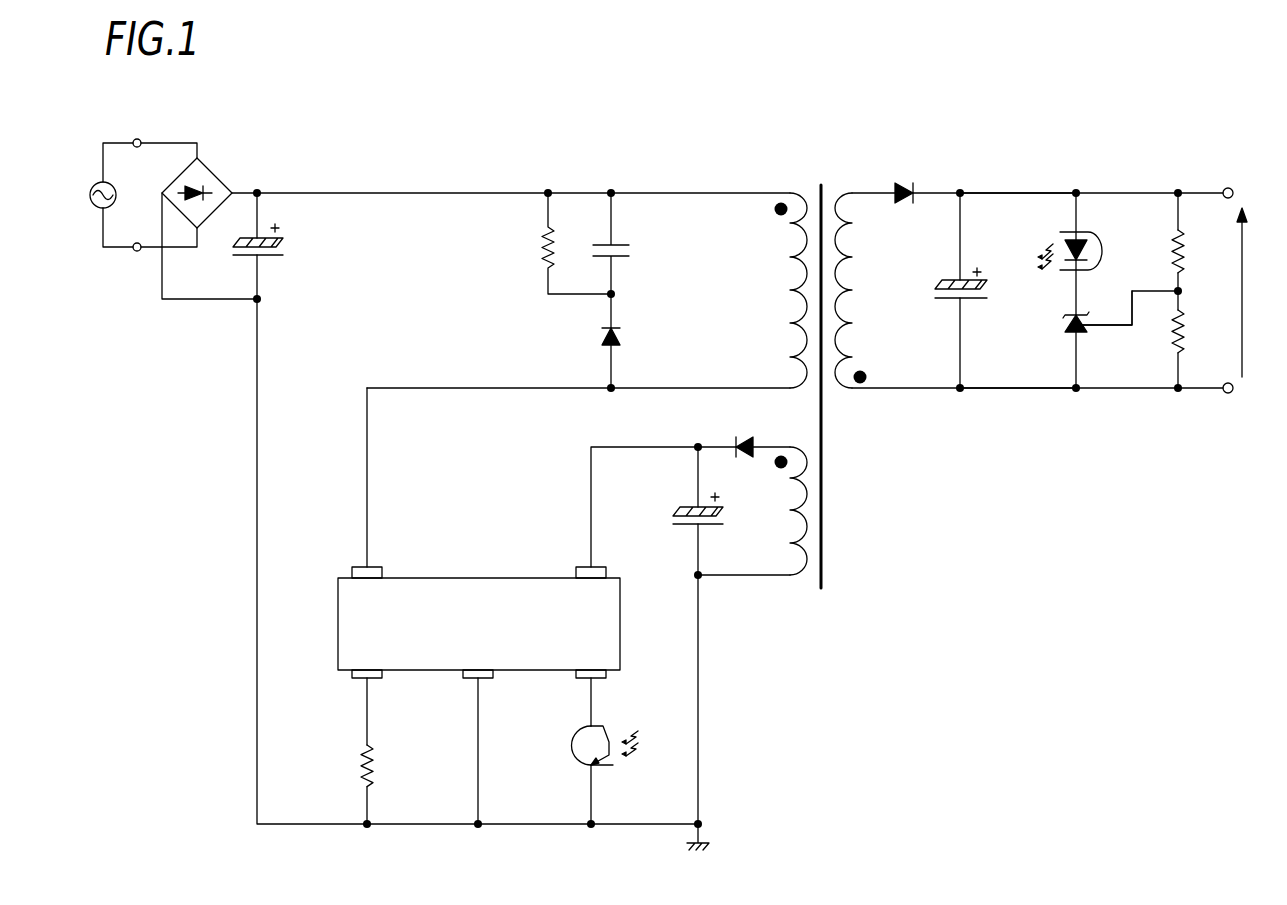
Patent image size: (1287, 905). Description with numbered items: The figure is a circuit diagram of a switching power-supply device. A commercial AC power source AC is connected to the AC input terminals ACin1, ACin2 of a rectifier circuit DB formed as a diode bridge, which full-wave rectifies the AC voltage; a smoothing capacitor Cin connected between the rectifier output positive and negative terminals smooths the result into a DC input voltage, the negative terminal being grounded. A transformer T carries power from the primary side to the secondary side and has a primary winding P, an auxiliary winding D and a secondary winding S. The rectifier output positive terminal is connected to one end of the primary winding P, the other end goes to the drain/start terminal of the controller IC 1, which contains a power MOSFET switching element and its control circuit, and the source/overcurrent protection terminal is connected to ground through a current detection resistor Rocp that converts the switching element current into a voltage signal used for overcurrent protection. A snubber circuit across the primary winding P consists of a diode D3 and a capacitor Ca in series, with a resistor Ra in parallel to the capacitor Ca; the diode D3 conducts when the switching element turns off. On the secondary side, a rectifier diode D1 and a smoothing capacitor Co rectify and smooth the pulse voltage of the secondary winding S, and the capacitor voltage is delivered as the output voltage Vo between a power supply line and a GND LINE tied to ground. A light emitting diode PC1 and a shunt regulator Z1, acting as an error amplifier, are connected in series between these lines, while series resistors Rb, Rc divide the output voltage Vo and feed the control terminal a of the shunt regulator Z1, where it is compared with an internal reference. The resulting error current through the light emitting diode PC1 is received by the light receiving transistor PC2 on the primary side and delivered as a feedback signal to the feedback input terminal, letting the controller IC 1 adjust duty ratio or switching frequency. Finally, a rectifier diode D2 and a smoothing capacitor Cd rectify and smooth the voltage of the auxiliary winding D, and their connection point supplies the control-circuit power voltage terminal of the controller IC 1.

The controller IC 1 is at (505, 577).
The commercial AC power source AC is at (96, 195).
The AC input terminal ACin1 is at (152, 136).
The AC input terminal ACin2 is at (143, 256).
The rectifier circuit DB is at (209, 228).
The smoothing capacitor Cin is at (250, 234).
The resistor Ra is at (561, 243).
The capacitor Ca is at (628, 243).
The diode D3 is at (627, 341).
The transformer T is at (820, 373).
The primary winding P is at (784, 290).
The secondary winding S is at (855, 290).
The auxiliary winding D is at (784, 511).
The rectifier diode D1 is at (907, 179).
The smoothing capacitor Co is at (957, 277).
The light emitting diode PC1 is at (1059, 239).
The shunt regulator Z1 is at (1063, 324).
The control terminal a is at (1106, 318).
The resistor Rb is at (1194, 251).
The resistor Rc is at (1194, 331).
The output voltage Vo is at (1254, 292).
The GND line GND LINE is at (1014, 392).
The rectifier diode D2 is at (746, 435).
The smoothing capacitor Cd is at (695, 502).
The current detection resistor Rocp is at (390, 755).
The light receiving transistor PC2 is at (605, 760).